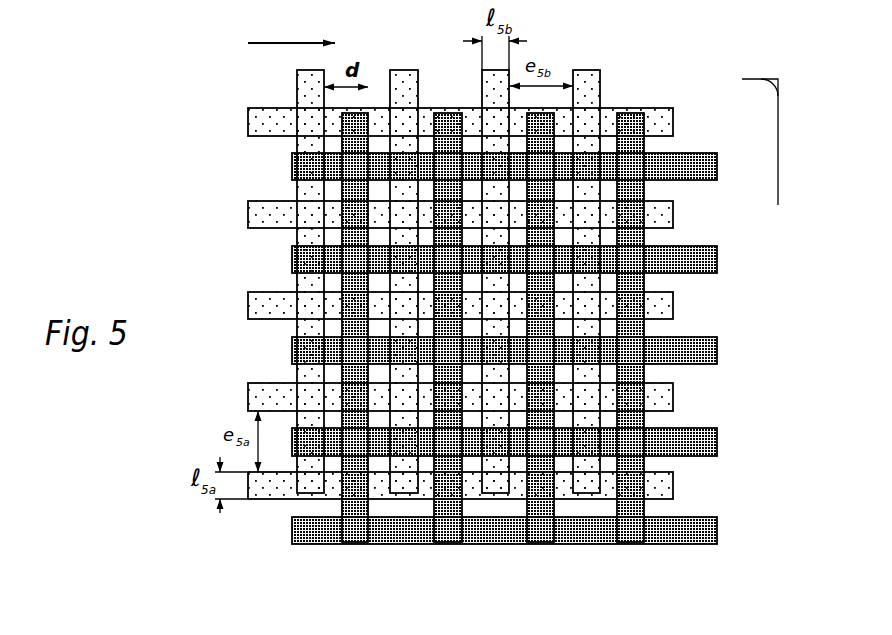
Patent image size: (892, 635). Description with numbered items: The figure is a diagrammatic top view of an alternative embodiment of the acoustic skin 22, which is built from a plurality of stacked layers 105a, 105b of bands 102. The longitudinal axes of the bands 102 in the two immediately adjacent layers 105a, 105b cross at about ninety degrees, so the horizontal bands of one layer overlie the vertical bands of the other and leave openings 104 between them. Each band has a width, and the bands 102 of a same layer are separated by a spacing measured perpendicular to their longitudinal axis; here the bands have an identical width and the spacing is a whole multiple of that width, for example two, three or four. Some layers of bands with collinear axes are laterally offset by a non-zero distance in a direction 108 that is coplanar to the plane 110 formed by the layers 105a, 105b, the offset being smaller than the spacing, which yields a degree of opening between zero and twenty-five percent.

The acoustic skin 22 is at (524, 272).
The bands 102 is at (588, 465).
The openings 104 is at (605, 418).
The layer 105a is at (660, 118).
The layer 105b is at (590, 78).
The direction 108 is at (282, 43).
The plane 110 is at (778, 135).